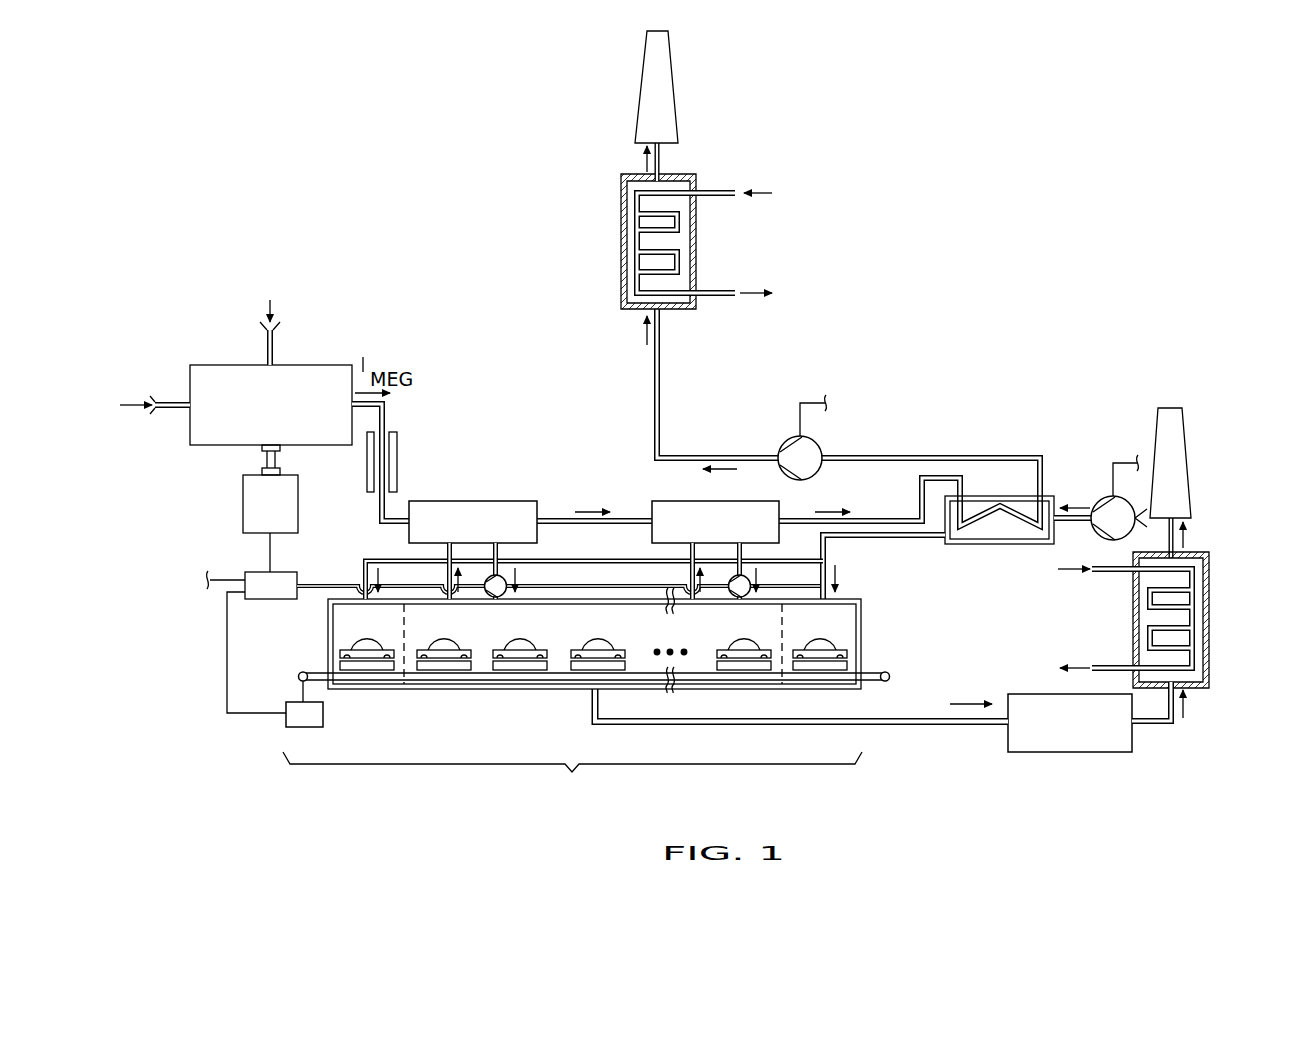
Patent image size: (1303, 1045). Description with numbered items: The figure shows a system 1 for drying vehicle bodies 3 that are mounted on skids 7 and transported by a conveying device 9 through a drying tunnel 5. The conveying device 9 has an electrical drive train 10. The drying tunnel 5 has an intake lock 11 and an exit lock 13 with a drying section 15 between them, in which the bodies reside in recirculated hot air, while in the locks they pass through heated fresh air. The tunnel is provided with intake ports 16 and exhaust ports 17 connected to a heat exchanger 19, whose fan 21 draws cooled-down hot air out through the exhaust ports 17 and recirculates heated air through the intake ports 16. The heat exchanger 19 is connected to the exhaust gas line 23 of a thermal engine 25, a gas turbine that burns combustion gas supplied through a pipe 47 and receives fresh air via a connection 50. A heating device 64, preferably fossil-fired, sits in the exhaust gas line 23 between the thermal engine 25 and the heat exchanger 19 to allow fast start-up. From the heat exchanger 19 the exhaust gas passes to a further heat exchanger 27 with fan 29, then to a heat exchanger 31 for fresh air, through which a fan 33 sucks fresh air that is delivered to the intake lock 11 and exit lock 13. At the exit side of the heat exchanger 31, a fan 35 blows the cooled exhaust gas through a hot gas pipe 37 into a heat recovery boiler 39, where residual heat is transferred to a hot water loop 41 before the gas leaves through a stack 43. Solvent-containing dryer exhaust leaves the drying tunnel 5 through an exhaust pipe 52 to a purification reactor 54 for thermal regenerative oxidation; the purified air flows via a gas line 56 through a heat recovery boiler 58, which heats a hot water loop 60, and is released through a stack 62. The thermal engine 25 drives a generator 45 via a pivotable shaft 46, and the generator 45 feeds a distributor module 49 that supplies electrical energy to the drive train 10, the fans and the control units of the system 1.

The system 1 is at (336, 195).
The vehicle body 3 is at (360, 645).
The drying tunnel 5 is at (572, 694).
The skid 7 is at (383, 665).
The conveying device 9 is at (882, 668).
The electrical drive train 10 is at (283, 722).
The intake lock 11 is at (347, 590).
The exit lock 13 is at (845, 602).
The drying section 15 is at (515, 690).
The intake port 16 is at (496, 600).
The exhaust port 17 is at (450, 600).
The heat exchanger 19 is at (525, 500).
The fan 21 is at (512, 577).
The exhaust gas line 23 is at (378, 500).
The thermal engine 25 is at (220, 362).
The heat exchanger 27 is at (650, 500).
The fan 29 is at (755, 580).
The heat exchanger for fresh air 31 is at (983, 553).
The fan 33 is at (1100, 494).
The fan 35 is at (787, 438).
The hot gas pipe 37 is at (653, 409).
The heat recovery boiler 39 is at (620, 238).
The hot water loop 41 is at (713, 190).
The stack 43 is at (676, 88).
The generator 45 is at (243, 502).
The pivotable shaft 46 is at (265, 458).
The pipe 47 is at (170, 396).
The distributor module 49 is at (265, 600).
The connection 50 is at (276, 340).
The exhaust pipe 52 is at (935, 727).
The purification reactor 54 is at (1030, 754).
The gas line 56 is at (1157, 724).
The heat recovery boiler 58 is at (1212, 622).
The hot water loop 60 is at (1100, 572).
The stack 62 is at (1190, 455).
The heating device 64 is at (398, 462).